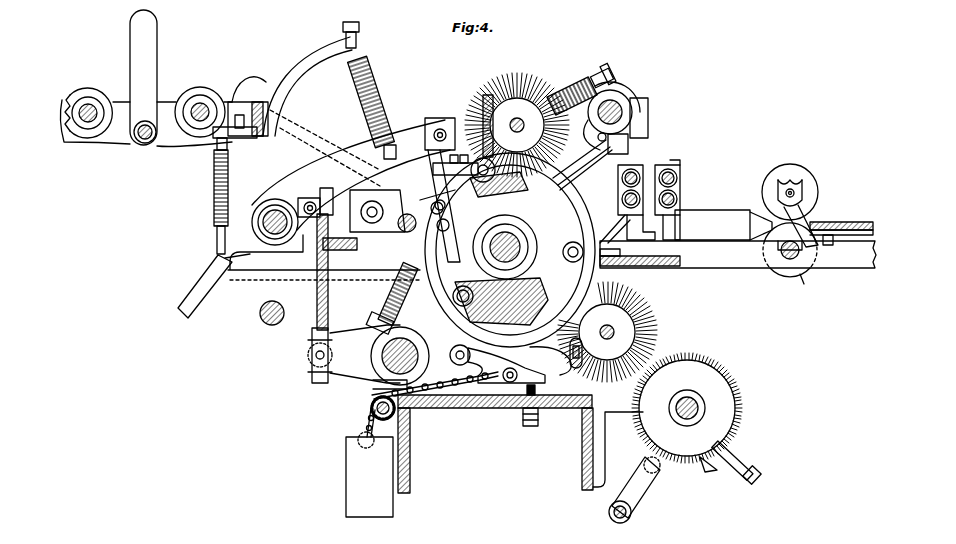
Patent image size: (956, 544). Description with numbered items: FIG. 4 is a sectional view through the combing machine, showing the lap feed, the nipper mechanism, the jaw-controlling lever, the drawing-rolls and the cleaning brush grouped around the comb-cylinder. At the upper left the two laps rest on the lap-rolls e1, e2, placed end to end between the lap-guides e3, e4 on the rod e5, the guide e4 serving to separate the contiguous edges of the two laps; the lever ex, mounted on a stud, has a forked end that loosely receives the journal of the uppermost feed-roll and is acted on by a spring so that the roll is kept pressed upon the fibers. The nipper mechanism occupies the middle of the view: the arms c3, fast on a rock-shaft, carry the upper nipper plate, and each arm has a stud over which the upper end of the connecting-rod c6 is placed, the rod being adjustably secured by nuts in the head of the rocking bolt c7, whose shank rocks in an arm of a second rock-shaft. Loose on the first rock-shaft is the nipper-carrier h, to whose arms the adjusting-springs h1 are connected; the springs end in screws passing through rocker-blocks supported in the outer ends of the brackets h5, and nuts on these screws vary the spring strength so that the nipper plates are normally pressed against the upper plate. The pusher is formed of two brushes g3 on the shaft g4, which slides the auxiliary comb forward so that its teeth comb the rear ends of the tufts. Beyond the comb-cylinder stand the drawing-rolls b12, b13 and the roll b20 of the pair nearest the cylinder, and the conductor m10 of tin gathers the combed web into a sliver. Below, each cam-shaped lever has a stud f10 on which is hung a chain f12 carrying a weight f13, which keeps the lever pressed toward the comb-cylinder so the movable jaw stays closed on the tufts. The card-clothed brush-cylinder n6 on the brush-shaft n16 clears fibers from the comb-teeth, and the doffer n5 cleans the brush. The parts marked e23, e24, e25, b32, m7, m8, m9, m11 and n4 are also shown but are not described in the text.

The lap-roll e1 is at (97, 100).
The lap-roll e2 is at (202, 103).
The lap-guide e3 is at (157, 40).
The rod e5 is at (146, 143).
The arm e23 is at (290, 105).
The spring e24 is at (214, 185).
The plate e25 is at (236, 138).
The lever ex is at (214, 286).
The lap-guide e4 is at (445, 195).
The bracket h5 is at (300, 52).
The adjusting-spring h1 is at (380, 85).
The nipper-carrier h is at (396, 262).
The shaft g4 is at (517, 118).
The brush g3 is at (585, 95).
The drawing-roll b20 is at (640, 170).
The roller b32 is at (628, 206).
The drawing-roll b13 is at (680, 178).
The lowermost drawing-roll b12 is at (680, 199).
The conductor m10 is at (725, 212).
The wheel m9 is at (818, 193).
The bar m11 is at (738, 254).
The roller m7 is at (786, 258).
The pin m8 is at (805, 287).
The brush-shaft n16 is at (607, 332).
The doffer n5 is at (742, 420).
The card-clothed cylinder n6 is at (660, 468).
The rod n4 is at (631, 516).
The stud f10 is at (514, 366).
The chain f12 is at (458, 408).
The weight f13 is at (346, 450).
The arm c3 is at (379, 357).
The connecting-rod c6 is at (317, 312).
The rocking bolt c7 is at (312, 370).